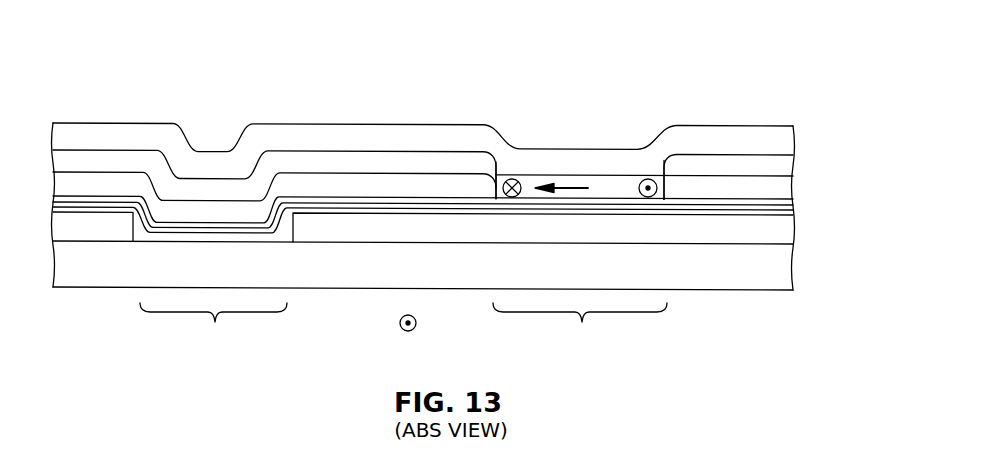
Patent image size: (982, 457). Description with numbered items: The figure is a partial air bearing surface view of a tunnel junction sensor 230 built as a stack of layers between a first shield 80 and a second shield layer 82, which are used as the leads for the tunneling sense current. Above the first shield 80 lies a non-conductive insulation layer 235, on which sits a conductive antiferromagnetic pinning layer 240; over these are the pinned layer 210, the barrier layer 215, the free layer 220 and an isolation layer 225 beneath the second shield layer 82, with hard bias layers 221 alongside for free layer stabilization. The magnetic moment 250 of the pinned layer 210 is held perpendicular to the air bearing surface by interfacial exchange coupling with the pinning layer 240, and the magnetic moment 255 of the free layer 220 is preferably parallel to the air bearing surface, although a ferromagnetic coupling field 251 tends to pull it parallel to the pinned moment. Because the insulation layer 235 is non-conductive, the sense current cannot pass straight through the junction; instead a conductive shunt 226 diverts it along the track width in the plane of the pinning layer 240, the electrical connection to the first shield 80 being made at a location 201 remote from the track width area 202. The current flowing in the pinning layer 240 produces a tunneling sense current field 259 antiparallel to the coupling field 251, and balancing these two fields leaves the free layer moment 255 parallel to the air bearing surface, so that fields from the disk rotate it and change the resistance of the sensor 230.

The first shield 80 is at (787, 268).
The second shield layer 82 is at (552, 155).
The location 201 is at (213, 327).
The track width area 202 is at (580, 327).
The pinned layer 210 is at (778, 210).
The barrier layer 215 is at (783, 200).
The free layer 220 is at (617, 183).
The hard bias layers 221 is at (315, 183).
The isolation layer 225 is at (582, 173).
The conductive shunt 226 is at (207, 120).
The tunnel junction sensor 230 is at (737, 80).
The insulation layer 235 is at (327, 230).
The pinning layer 240 is at (688, 213).
The magnetic moment of the pinned layer 250 is at (405, 205).
The ferromagnetic coupling field 251 is at (652, 178).
The magnetic moment of the free layer 255 is at (574, 192).
The tunneling sense current field 259 is at (512, 177).